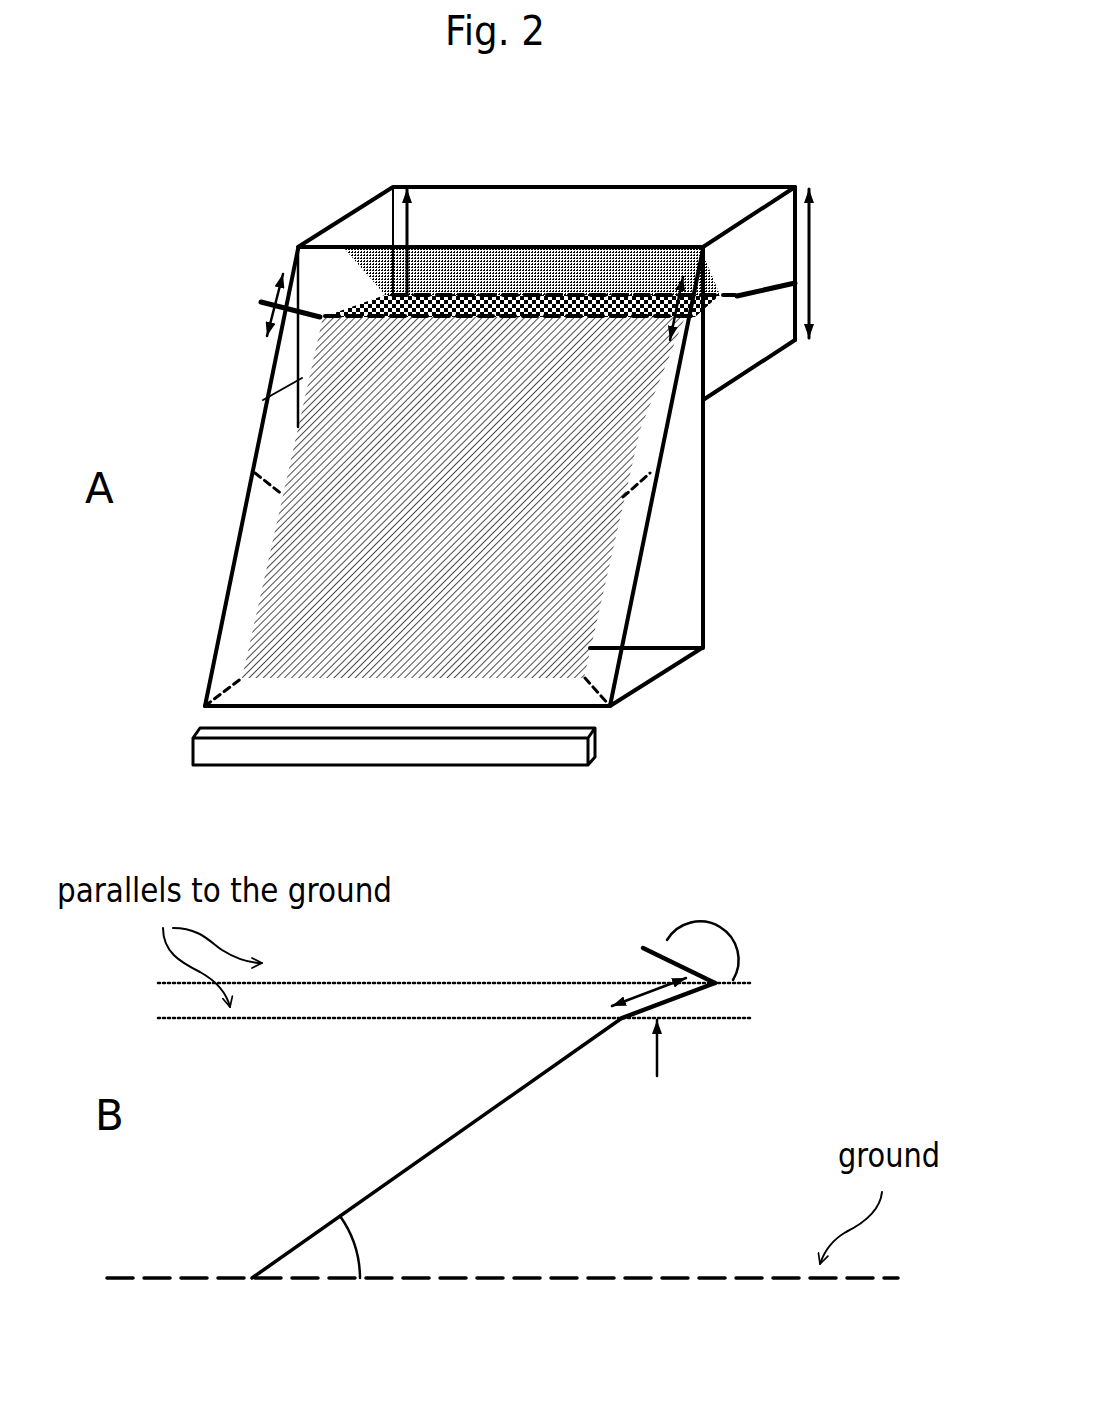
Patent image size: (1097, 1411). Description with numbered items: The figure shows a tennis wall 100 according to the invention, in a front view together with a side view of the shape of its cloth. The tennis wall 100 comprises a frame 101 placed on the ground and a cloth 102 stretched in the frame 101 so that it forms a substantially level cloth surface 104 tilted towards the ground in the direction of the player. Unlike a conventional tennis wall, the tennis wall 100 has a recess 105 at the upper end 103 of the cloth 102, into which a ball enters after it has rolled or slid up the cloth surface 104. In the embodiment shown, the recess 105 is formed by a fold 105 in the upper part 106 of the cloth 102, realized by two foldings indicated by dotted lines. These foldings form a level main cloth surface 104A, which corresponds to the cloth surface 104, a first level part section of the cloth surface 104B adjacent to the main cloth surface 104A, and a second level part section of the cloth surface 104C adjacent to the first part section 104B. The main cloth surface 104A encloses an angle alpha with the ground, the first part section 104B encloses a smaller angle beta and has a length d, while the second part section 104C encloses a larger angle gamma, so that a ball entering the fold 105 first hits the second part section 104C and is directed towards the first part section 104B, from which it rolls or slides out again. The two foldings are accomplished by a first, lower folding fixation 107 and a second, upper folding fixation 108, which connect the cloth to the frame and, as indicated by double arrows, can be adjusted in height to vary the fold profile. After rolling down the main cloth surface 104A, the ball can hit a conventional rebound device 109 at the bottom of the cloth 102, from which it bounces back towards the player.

The tennis wall 100 is at (742, 658).
The frame 101 is at (718, 518).
The cloth 102 is at (285, 457).
The upper end of the cloth 103 is at (318, 320).
The level cloth surface 104 is at (470, 486).
The level main cloth surface 104A is at (406, 1148).
The first level part section of the cloth surface 104B is at (538, 298).
The second level part section of the cloth surface 104C is at (630, 261).
The recess (or fold) 105 is at (355, 282).
The upper part of the cloth 106 is at (262, 247).
The first folding fixation 107 is at (259, 304).
The second folding fixation 108 is at (393, 261).
The rebound device 109 is at (624, 747).